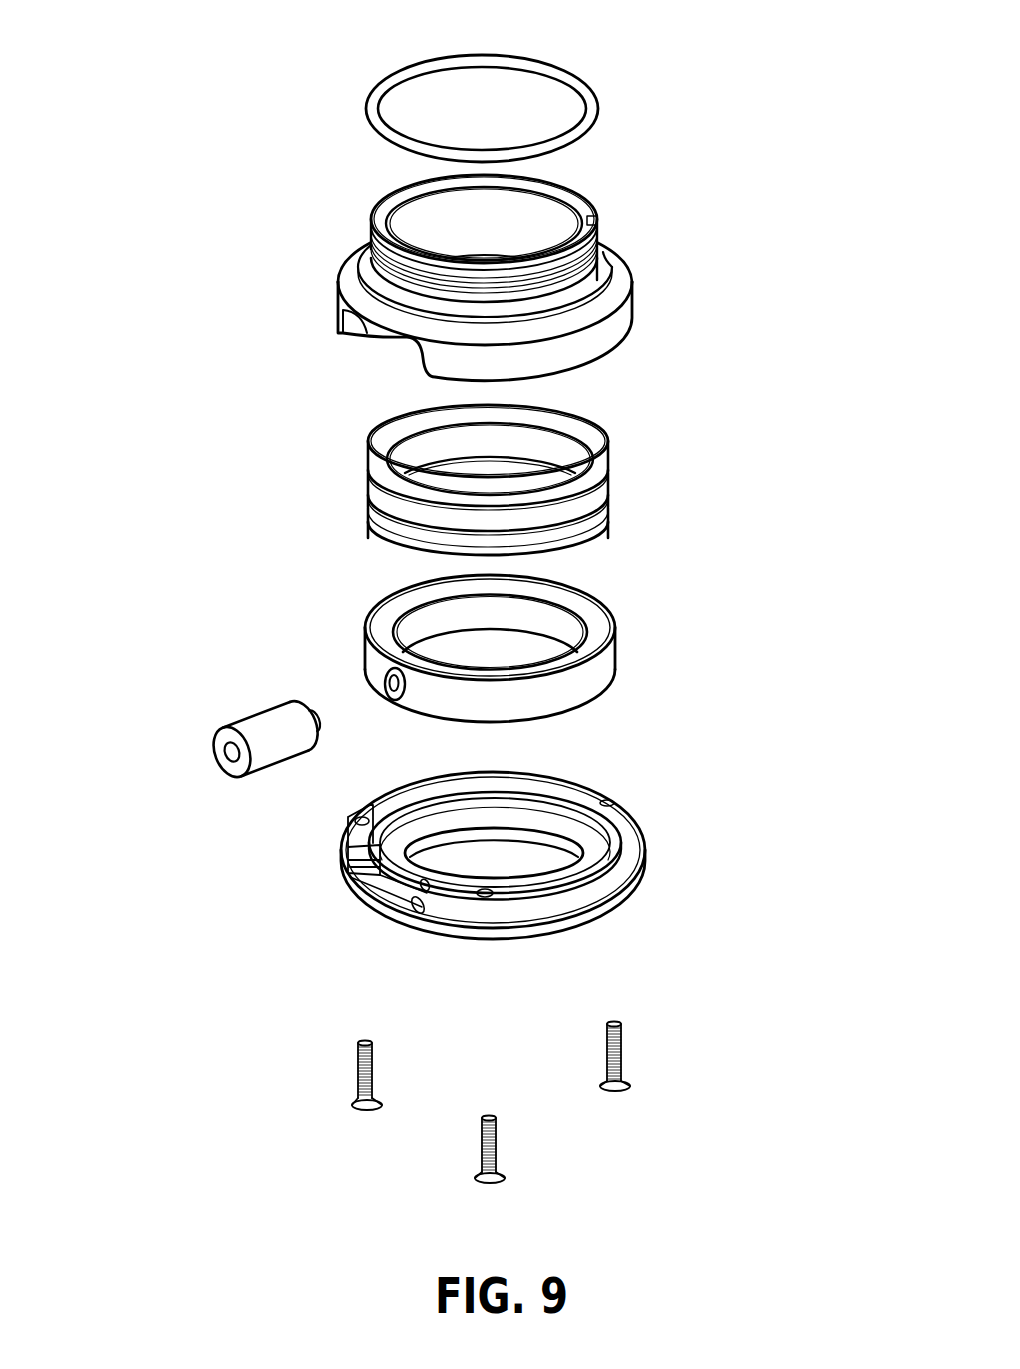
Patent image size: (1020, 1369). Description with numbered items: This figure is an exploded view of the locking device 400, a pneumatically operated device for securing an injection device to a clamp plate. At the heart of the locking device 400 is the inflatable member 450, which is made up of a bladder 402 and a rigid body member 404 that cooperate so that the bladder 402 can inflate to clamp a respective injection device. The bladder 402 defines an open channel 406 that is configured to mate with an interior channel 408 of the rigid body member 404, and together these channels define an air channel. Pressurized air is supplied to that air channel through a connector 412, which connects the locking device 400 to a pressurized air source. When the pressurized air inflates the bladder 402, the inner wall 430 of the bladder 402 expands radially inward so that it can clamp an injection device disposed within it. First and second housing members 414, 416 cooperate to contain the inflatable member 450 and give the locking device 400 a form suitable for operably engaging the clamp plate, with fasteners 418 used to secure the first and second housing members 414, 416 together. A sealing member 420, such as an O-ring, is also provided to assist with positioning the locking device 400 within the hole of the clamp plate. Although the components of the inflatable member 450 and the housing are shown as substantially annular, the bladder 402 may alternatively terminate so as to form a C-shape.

The locking device 400 is at (296, 140).
The sealing member 420 is at (590, 110).
The first housing member 414 is at (585, 283).
The inner wall 430 is at (425, 440).
The bladder 402 is at (430, 481).
The open channel 406 is at (427, 517).
The inflatable member 450 is at (655, 700).
The interior channel 408 is at (436, 620).
The rigid body member 404 is at (467, 669).
The connector 412 is at (232, 723).
The second housing member 416 is at (630, 877).
The fasteners 418 is at (355, 1082).